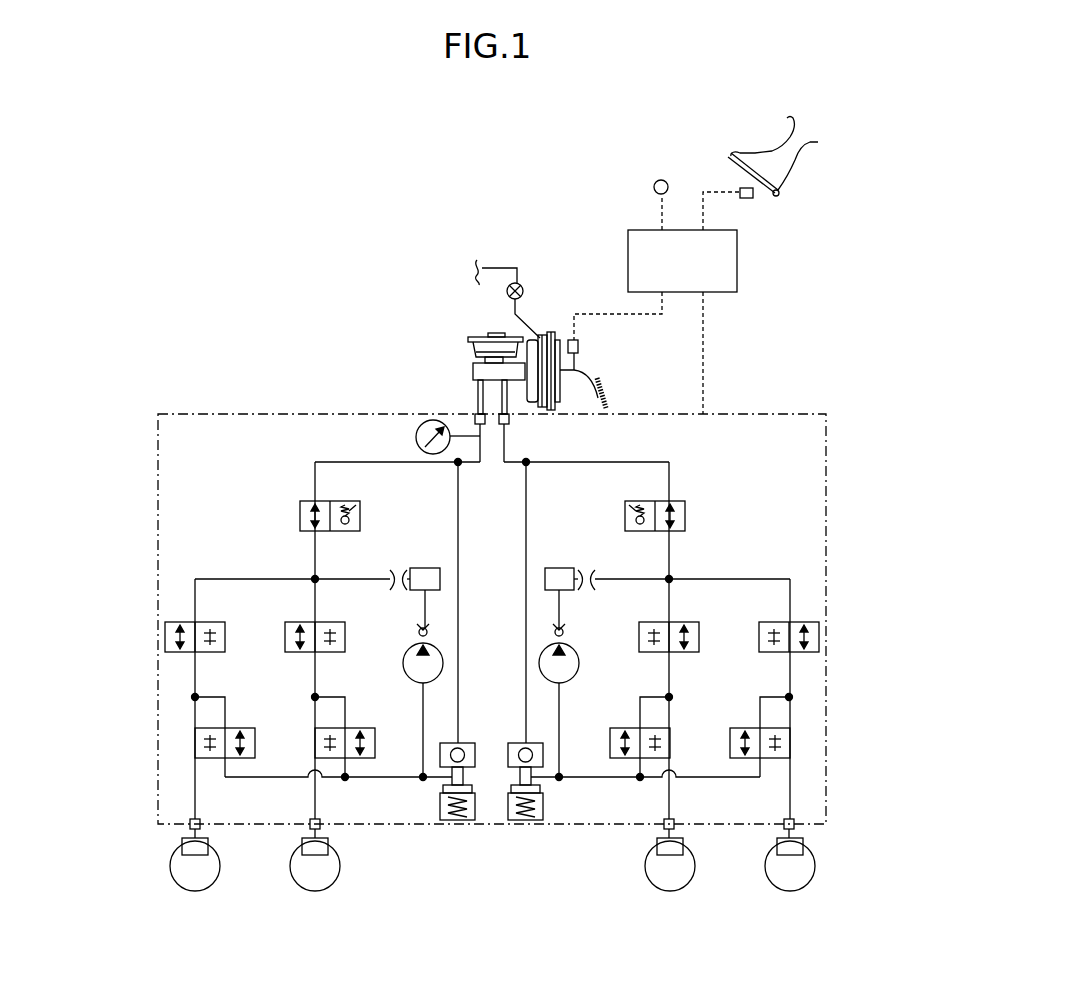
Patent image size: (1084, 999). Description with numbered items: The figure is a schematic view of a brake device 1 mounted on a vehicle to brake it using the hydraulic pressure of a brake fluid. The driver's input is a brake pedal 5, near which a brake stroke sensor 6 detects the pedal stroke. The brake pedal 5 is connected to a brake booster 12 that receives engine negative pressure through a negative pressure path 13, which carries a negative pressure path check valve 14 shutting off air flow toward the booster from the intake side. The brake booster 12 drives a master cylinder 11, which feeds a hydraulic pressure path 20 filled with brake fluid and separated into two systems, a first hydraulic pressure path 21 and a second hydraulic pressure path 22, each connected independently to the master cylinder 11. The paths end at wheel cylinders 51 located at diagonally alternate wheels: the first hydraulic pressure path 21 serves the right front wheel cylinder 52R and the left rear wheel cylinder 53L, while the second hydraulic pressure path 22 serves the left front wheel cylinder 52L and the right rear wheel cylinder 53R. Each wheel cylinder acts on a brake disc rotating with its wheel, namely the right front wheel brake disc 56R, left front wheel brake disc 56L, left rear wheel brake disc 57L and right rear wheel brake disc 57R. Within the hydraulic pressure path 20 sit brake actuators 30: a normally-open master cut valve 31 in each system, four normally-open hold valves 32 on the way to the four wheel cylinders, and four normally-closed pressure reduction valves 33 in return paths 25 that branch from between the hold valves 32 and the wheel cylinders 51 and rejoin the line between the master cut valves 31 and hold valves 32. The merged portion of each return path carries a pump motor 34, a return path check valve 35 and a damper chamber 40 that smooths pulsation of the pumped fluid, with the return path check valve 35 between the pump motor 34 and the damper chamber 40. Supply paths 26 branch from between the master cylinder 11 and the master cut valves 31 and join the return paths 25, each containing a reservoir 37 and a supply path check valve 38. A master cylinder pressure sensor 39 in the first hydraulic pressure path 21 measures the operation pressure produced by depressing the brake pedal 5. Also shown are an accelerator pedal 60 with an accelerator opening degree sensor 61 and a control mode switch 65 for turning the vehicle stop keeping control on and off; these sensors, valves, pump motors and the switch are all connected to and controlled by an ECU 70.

The brake device 1 is at (343, 266).
The brake pedal 5 is at (604, 385).
The brake stroke sensor 6 is at (579, 346).
The master cylinder 11 is at (473, 370).
The brake booster 12 is at (545, 332).
The negative pressure path 13 is at (500, 267).
The negative pressure path check valve 14 is at (506, 291).
The hydraulic pressure path 20 is at (328, 461).
The first hydraulic pressure path 21 is at (312, 477).
The second hydraulic pressure path 22 is at (672, 478).
The return path 25 is at (384, 577).
The supply path 26 is at (456, 489).
The brake actuator 30 is at (250, 412).
The master cut valve 31 is at (298, 516).
The hold valve 32 is at (240, 621).
The pressure reduction valve 33 is at (270, 727).
The pump motor 34 is at (402, 663).
The return path check valve 35 is at (420, 629).
The reservoir 37 is at (440, 806).
The supply path check valve 38 is at (462, 742).
The master cylinder pressure sensor 39 is at (416, 437).
The damper chamber 40 is at (425, 567).
The wheel cylinder 51 is at (492, 855).
The right front wheel cylinder 52R is at (180, 830).
The left front wheel cylinder 52L is at (805, 830).
The left rear wheel cylinder 53L is at (328, 830).
The right rear wheel cylinder 53R is at (655, 830).
The right front wheel brake disc 56R is at (195, 891).
The left front wheel brake disc 56L is at (790, 891).
The left rear wheel brake disc 57L is at (315, 891).
The right rear wheel brake disc 57R is at (670, 891).
The accelerator pedal 60 is at (730, 150).
The accelerator opening degree sensor 61 is at (748, 199).
The control mode switch 65 is at (662, 179).
The ECU 70 is at (628, 257).